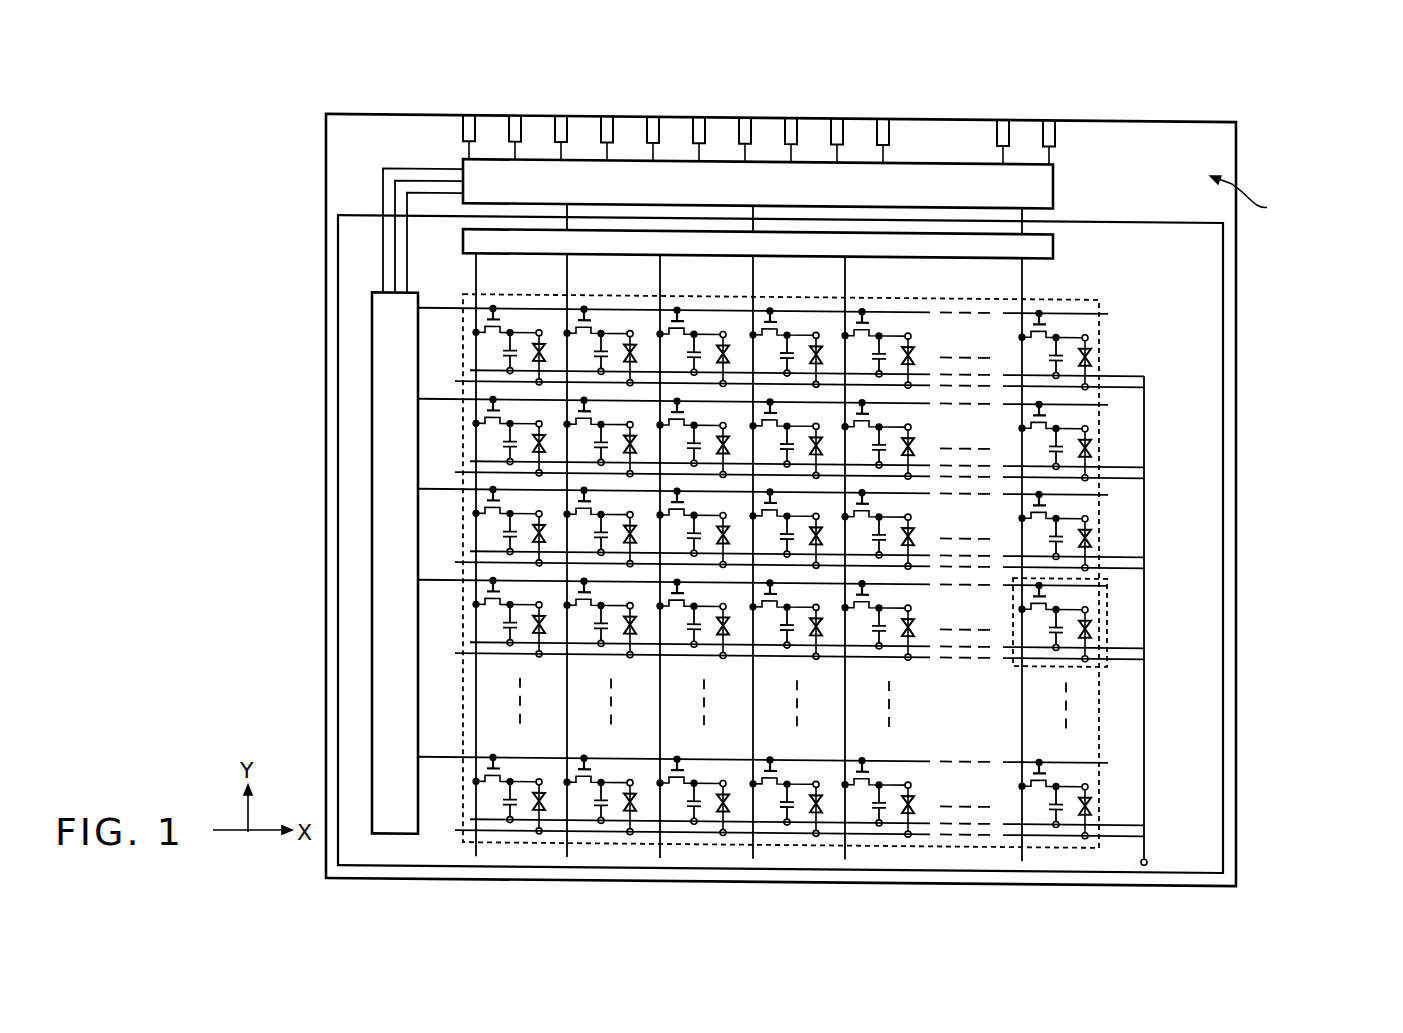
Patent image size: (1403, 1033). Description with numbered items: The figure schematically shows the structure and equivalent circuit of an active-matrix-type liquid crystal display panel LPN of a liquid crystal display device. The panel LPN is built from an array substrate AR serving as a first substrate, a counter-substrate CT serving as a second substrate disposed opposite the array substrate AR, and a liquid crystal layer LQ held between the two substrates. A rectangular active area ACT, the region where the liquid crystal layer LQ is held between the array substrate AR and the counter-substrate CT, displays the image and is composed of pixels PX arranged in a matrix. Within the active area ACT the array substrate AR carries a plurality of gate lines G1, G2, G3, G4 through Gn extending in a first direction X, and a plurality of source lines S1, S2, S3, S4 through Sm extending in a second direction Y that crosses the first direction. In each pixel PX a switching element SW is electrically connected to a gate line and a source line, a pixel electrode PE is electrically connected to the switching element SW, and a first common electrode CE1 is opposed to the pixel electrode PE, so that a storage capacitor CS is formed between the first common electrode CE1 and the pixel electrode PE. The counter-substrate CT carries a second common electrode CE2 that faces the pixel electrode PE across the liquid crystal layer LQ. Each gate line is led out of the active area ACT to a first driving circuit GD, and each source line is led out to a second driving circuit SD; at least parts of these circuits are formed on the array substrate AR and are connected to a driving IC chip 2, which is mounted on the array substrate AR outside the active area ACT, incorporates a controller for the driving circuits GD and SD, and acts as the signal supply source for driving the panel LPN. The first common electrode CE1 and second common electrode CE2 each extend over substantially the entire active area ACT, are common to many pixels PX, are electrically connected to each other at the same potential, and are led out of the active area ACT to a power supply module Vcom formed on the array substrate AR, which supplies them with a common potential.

The liquid crystal display panel LPN is at (1286, 117).
The driving IC chip 2 is at (1053, 154).
The array substrate AR is at (1256, 198).
The counter-substrate CT is at (1224, 271).
The second driving circuit SD is at (1053, 237).
The first driving circuit GD is at (372, 683).
The active area ACT is at (1099, 412).
The source line S1 is at (480, 272).
The source line S2 is at (571, 272).
The source line S3 is at (664, 272).
The source line S4 is at (757, 272).
The source line Sm is at (1026, 272).
The gate line G1 is at (437, 303).
The gate line G2 is at (437, 394).
The gate line G3 is at (437, 484).
The gate line G4 is at (437, 575).
The gate line Gn is at (437, 752).
The pixel PX is at (1093, 656).
The switching element SW is at (1016, 589).
The storage capacitor CS is at (1036, 623).
The pixel electrode PE is at (1089, 597).
The liquid crystal layer LQ is at (1092, 612).
The first common electrode CE1 is at (1057, 642).
The second common electrode CE2 is at (1090, 640).
The power supply module Vcom is at (1144, 855).